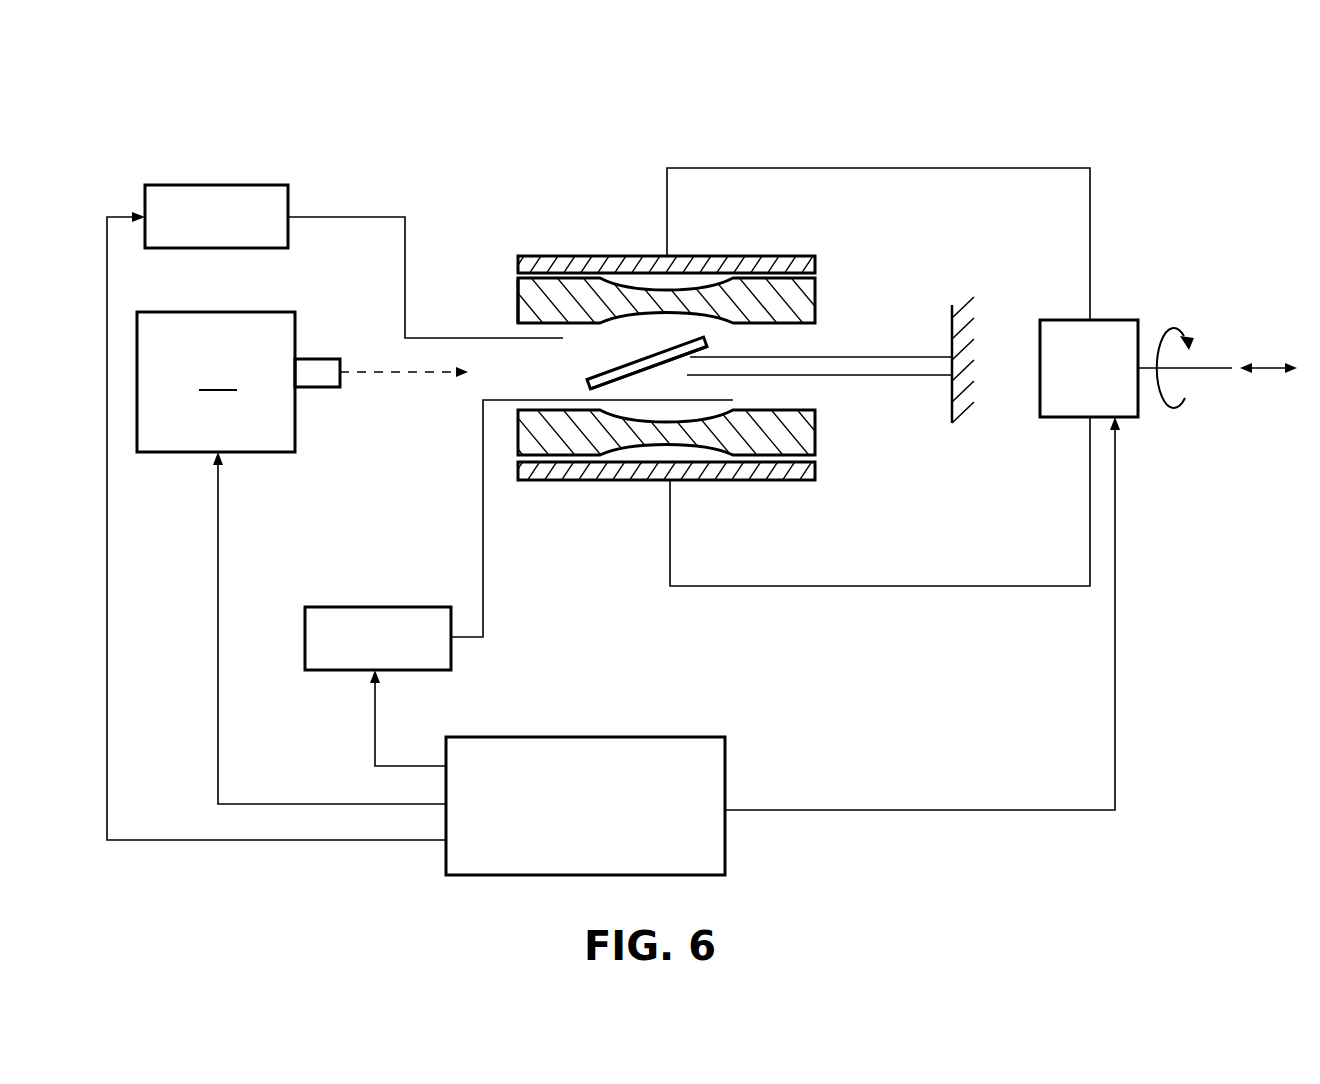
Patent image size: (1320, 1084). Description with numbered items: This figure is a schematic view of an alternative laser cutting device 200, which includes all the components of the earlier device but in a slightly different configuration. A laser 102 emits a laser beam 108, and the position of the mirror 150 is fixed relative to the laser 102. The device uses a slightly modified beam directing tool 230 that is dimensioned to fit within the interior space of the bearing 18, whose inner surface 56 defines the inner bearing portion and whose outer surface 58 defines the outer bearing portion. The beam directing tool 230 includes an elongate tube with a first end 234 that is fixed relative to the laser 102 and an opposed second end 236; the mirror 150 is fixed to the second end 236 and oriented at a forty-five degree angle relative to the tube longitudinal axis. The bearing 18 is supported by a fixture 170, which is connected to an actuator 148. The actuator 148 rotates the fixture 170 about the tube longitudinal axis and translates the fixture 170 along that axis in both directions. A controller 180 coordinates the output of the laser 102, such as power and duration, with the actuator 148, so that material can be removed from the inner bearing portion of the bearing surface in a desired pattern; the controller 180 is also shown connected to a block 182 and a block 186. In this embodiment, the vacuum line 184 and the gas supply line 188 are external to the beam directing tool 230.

The laser cutting device 200 is at (465, 140).
The laser driver 182 is at (248, 185).
The vacuum line 184 is at (360, 217).
The laser 102 is at (238, 382).
The laser beam 108 is at (392, 372).
The bearing 18 is at (806, 296).
The inner surface 56 is at (530, 326).
The outer surface 58 is at (568, 278).
The fixture 170 is at (776, 473).
The mirror 150 is at (688, 348).
The second end 236 is at (686, 372).
The beam directing tool 230 is at (878, 357).
The first end 234 is at (900, 377).
The actuator 148 is at (1113, 320).
The gas supply line 188 is at (482, 455).
The coil driver 186 is at (341, 607).
The controller 180 is at (685, 737).